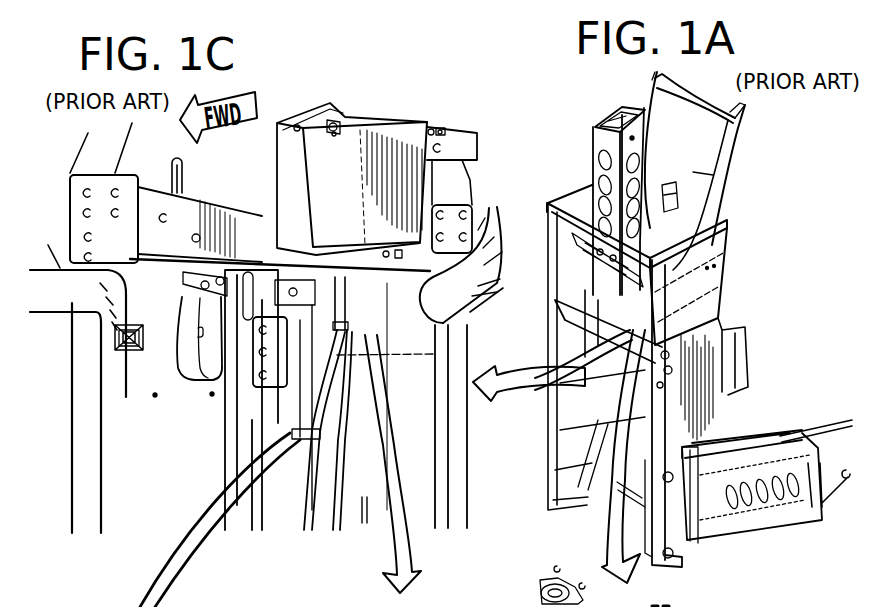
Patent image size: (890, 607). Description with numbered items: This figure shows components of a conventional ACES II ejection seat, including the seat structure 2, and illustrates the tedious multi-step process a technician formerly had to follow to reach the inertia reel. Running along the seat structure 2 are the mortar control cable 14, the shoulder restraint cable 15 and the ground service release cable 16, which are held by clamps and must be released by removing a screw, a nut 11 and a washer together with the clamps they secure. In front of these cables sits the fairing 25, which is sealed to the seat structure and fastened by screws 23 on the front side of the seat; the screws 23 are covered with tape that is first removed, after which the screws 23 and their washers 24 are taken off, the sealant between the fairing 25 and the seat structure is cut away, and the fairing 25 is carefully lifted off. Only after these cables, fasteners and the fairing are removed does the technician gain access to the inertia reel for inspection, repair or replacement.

In FIG. 1C, the seat frame arm 2 is at (458, 290).
In FIG. 1A, the nut 11 is at (531, 594).
In FIG. 1C, the mortar control cable 14 is at (318, 460).
In FIG. 1C, the shoulder restraint cable 15 is at (287, 413).
In FIG. 1C, the ground service release cable 16 is at (333, 483).
In FIG. 1C, the screws 23 is at (343, 131).
In FIG. 1C, the washers 24 is at (341, 120).
In FIG. 1C, the fairing 25 is at (303, 196).